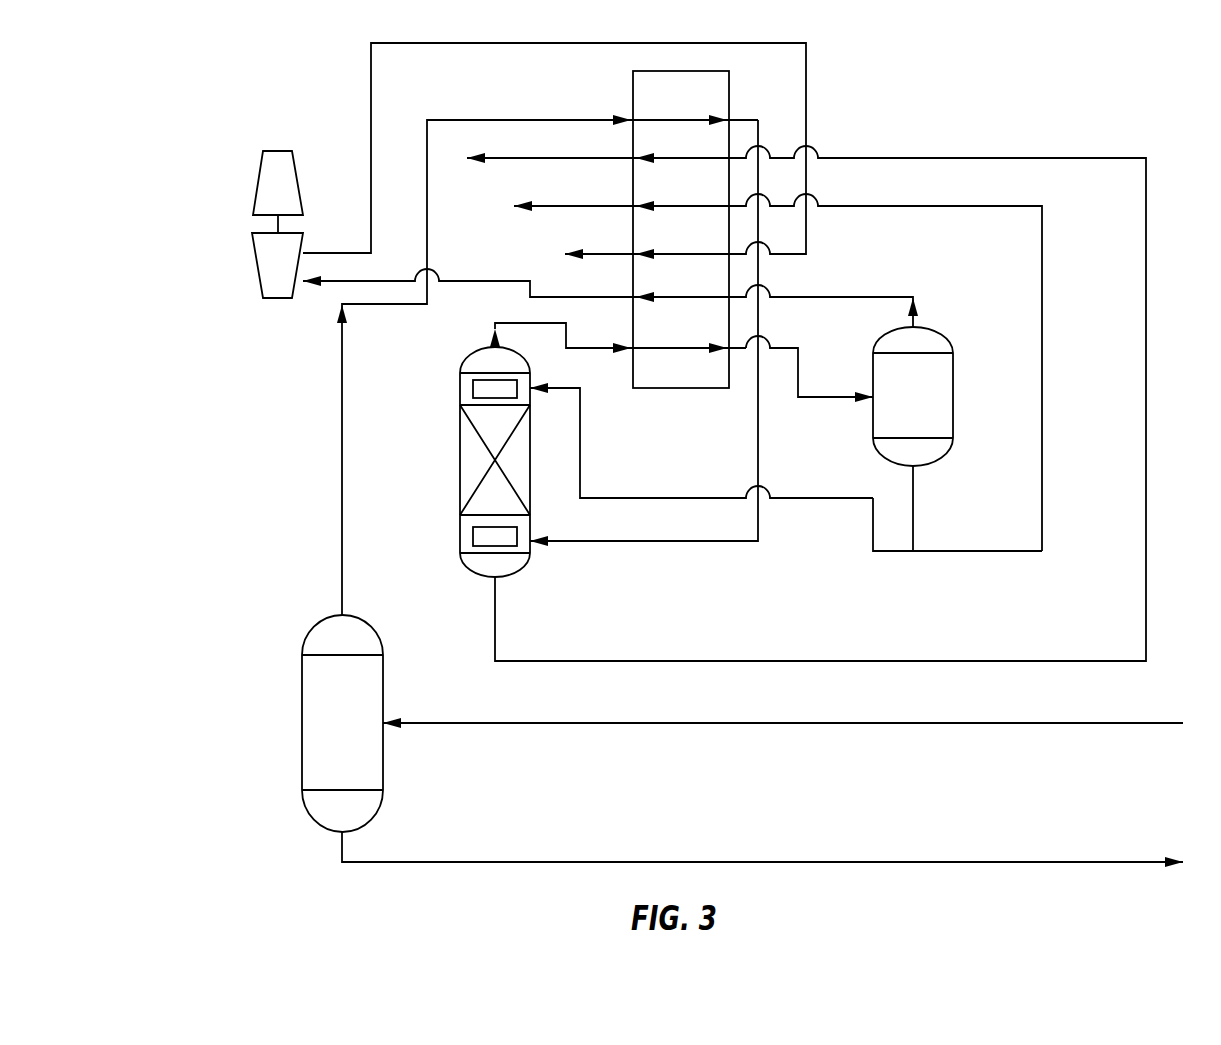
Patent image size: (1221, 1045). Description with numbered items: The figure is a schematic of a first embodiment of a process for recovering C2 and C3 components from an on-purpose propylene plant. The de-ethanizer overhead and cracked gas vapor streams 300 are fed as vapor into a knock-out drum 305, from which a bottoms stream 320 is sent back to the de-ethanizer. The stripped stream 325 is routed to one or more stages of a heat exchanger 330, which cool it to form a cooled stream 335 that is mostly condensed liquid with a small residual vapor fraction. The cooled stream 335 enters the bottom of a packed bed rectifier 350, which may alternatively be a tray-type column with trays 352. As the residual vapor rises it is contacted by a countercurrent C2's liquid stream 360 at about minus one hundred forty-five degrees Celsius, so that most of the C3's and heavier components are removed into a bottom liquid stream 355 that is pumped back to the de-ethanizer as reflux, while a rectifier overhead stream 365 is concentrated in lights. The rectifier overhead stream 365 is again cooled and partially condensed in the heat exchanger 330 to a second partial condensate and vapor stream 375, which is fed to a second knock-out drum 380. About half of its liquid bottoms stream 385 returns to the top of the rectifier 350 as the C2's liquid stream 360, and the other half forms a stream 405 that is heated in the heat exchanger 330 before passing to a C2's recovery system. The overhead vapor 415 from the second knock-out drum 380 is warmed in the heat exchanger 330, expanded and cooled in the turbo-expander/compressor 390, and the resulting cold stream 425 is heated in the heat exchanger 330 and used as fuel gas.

The de-ethanizer overhead and cracked gas vapor streams 300 is at (875, 725).
The knock-out drum 305 is at (300, 745).
The bottoms stream 320 is at (582, 861).
The stripped stream 325 is at (340, 443).
The heat exchanger 330 is at (707, 390).
The cooled stream 335 is at (760, 520).
The packed bed rectifier 350 is at (460, 522).
The trays 352 is at (473, 390).
The bottom liquid stream 355 is at (657, 660).
The C2's liquid stream 360 is at (708, 497).
The rectifier overhead stream 365 is at (490, 345).
The second partial condensate and vapor stream 375 is at (786, 348).
The second knock-out drum 380 is at (955, 400).
The liquid bottoms stream 385 is at (915, 522).
The turbo-expander/compressor 390 is at (258, 184).
The stream 405 is at (1045, 330).
The overhead vapor 415 is at (915, 322).
The cold stream 425 is at (370, 98).